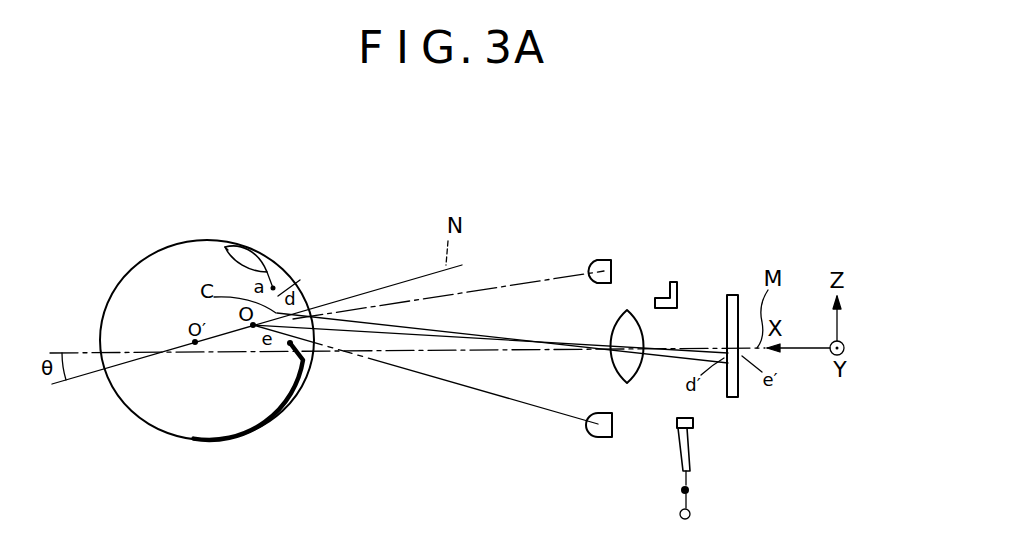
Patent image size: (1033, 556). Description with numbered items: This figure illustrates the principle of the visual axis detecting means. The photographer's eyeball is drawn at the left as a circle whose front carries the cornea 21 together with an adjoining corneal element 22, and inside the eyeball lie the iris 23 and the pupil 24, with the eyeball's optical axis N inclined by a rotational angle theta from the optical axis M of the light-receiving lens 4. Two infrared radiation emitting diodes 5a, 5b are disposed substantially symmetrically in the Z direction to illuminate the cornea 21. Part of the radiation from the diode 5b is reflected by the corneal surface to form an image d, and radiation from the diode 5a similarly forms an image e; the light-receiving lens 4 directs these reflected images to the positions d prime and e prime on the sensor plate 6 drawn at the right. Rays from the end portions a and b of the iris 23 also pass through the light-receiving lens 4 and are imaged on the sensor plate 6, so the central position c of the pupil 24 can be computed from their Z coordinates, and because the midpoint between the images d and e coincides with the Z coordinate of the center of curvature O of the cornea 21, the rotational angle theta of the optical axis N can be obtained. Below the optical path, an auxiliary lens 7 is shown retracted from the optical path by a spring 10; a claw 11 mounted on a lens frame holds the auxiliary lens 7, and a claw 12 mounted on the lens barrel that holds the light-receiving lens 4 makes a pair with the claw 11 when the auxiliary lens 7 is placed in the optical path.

The cornea 21 is at (293, 278).
The cornea 22 is at (250, 255).
The iris 23 is at (228, 250).
The pupil 24 is at (300, 280).
The light-receiving lens 4 is at (629, 322).
The infrared radiation emitting diode 5a is at (598, 437).
The infrared radiation emitting diode 5b is at (596, 260).
The image sensor 6 is at (733, 295).
The auxiliary lens 7 is at (690, 469).
The spring 10 is at (690, 498).
The claw 11 is at (693, 422).
The claw 12 is at (672, 282).